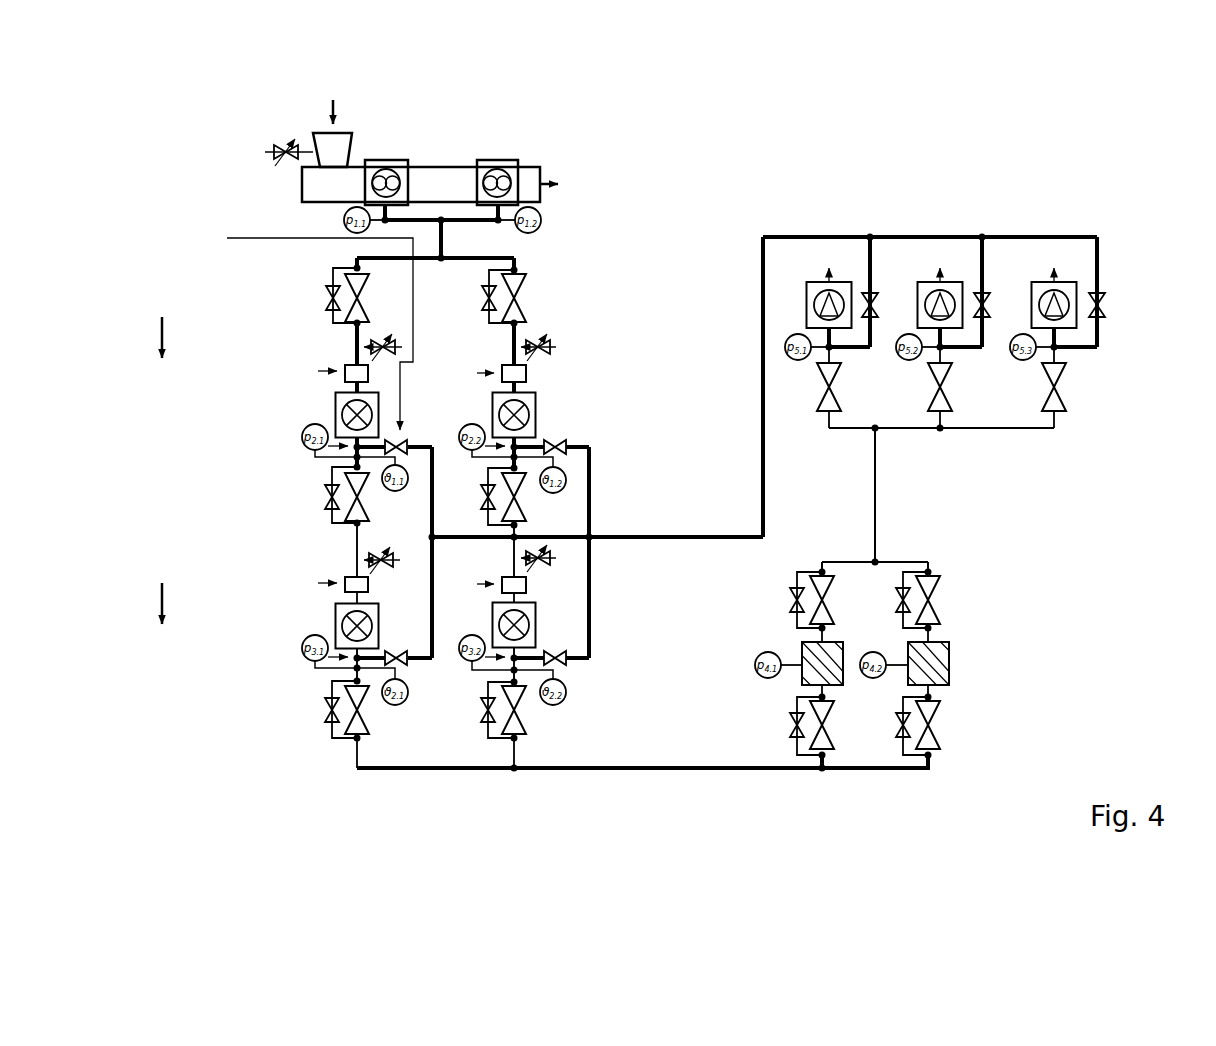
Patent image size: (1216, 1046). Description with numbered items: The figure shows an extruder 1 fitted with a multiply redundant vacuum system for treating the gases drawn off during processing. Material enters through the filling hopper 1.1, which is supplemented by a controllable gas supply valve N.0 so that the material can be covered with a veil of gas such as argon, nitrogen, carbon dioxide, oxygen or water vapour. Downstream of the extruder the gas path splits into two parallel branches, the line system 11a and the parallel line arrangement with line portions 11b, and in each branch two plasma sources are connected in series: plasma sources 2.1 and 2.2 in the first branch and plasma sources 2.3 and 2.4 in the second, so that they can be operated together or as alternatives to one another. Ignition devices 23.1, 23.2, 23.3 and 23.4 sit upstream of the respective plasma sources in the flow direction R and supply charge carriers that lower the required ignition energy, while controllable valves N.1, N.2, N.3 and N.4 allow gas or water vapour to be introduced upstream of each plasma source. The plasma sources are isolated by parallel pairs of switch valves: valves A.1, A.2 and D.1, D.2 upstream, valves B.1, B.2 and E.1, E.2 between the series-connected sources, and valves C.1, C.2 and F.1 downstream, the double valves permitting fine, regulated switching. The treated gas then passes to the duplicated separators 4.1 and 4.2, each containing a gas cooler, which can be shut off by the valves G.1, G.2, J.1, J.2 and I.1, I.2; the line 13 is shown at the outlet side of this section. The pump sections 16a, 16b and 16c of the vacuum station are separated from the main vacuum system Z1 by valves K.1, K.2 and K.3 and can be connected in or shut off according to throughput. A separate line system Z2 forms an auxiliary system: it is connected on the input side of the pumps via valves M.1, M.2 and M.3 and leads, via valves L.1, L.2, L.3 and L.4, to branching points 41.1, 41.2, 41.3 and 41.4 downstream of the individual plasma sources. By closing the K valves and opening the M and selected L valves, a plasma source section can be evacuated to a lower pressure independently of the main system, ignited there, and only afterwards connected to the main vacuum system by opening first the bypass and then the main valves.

The extruder 1 is at (441, 178).
The filling hopper 1.1 is at (360, 152).
The controllable gas supply valve N.0 is at (283, 141).
The plasma source 2.1 is at (327, 400).
The plasma source 2.2 is at (327, 627).
The plasma source 2.3 is at (545, 415).
The plasma source 2.4 is at (545, 627).
The line system 11a is at (346, 353).
The line portion 11b is at (526, 330).
The discharge line 13 is at (921, 778).
The pump section 16a is at (848, 272).
The pump section 16b is at (960, 272).
The pump section 16c is at (1087, 325).
The ignition device 23.1 is at (336, 382).
The ignition device 23.2 is at (336, 593).
The ignition device 23.3 is at (536, 373).
The ignition device 23.4 is at (536, 584).
The branching point 41.1 is at (346, 463).
The branching point 41.2 is at (346, 677).
The branching point 41.3 is at (526, 465).
The branching point 41.4 is at (502, 677).
The separator 4.1 is at (792, 685).
The separator 4.2 is at (962, 664).
The switch valve A.1 is at (374, 298).
The switch valve A.2 is at (318, 298).
The valve B.1 is at (374, 497).
The valve B.2 is at (318, 497).
The switch valve C.1 is at (374, 712).
The switch valve C.2 is at (318, 712).
The main valve D.1 is at (531, 298).
The switch valve D.2 is at (475, 298).
The main valve E.1 is at (534, 497).
The valve E.2 is at (474, 497).
The main valve F.1 is at (531, 710).
The switch valve G.1 is at (840, 727).
The switch valve G.2 is at (475, 710).
The valve I.1 is at (946, 727).
The valve I.2 is at (890, 727).
The switch valve J.1 is at (948, 600).
The switch valve J.2 is at (889, 600).
The valve K.1 is at (848, 387).
The valve K.2 is at (959, 387).
The valve K.3 is at (1073, 387).
The valve L.1 is at (315, 341).
The valve L.2 is at (397, 645).
The valve L.3 is at (555, 434).
The valve L.4 is at (555, 645).
The valve M.1 is at (887, 305).
The valve M.2 is at (999, 305).
The valve M.3 is at (1114, 305).
The controllable valve N.1 is at (383, 335).
The controllable valve N.2 is at (566, 347).
The controllable valve N.3 is at (380, 548).
The controllable valve N.4 is at (566, 560).
The main vacuum system Z1 is at (886, 487).
The separate line system Z2 is at (1070, 228).
The flow direction R is at (152, 470).